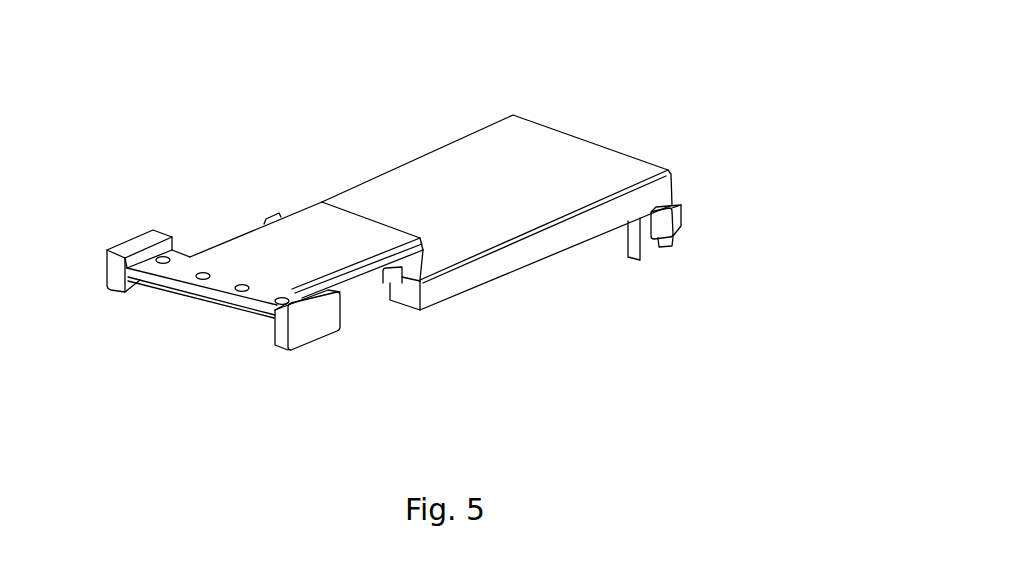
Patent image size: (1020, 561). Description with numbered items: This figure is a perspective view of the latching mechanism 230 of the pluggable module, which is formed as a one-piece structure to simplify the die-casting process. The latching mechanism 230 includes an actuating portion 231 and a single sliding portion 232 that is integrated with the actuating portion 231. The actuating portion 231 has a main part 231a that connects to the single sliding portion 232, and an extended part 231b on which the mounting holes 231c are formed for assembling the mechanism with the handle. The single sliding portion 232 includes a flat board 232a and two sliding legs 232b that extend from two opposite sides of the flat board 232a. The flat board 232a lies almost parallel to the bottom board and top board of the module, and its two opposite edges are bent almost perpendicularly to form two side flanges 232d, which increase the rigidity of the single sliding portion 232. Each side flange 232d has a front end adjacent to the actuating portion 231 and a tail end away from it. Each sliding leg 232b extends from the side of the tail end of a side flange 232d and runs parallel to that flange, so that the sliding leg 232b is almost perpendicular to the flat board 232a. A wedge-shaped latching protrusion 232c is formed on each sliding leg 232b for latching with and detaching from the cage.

The latching mechanism 230 is at (78, 38).
The actuating portion 231 is at (283, 212).
The main part 231a is at (248, 245).
The extended part 231b is at (183, 267).
The mounting holes 231c is at (281, 302).
The single sliding portion 232 is at (416, 150).
The flat board 232a is at (565, 150).
The sliding legs 232b is at (648, 242).
The latching protrusion 232c is at (677, 224).
The side flanges 232d is at (508, 260).